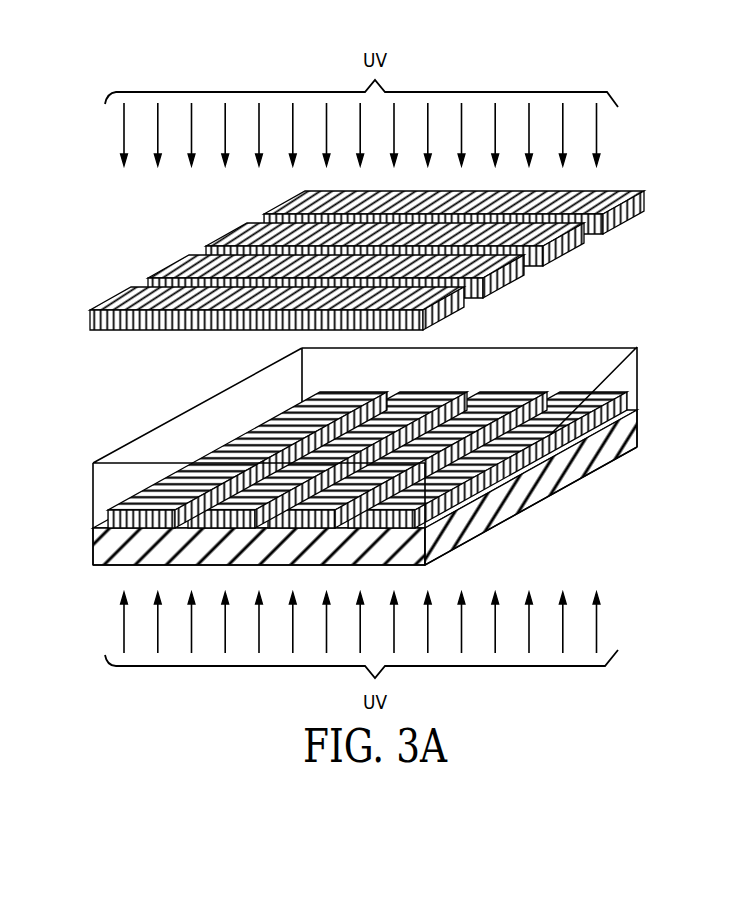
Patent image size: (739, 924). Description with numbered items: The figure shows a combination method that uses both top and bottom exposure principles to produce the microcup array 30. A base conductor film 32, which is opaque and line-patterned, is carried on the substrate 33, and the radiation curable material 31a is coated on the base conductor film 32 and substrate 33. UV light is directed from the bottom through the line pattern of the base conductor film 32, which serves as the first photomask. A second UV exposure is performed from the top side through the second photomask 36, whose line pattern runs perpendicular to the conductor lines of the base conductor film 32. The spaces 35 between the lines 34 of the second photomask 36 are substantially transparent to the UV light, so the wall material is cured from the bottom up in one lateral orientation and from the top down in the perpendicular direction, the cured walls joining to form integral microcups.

The microcup array 30 is at (348, 251).
The lines 34 is at (184, 271).
The spaces 35 is at (144, 283).
The second photomask 36 is at (261, 214).
The radiation curable material 31a is at (336, 459).
The base conductor film 32 is at (112, 515).
The substrate 33 is at (113, 547).